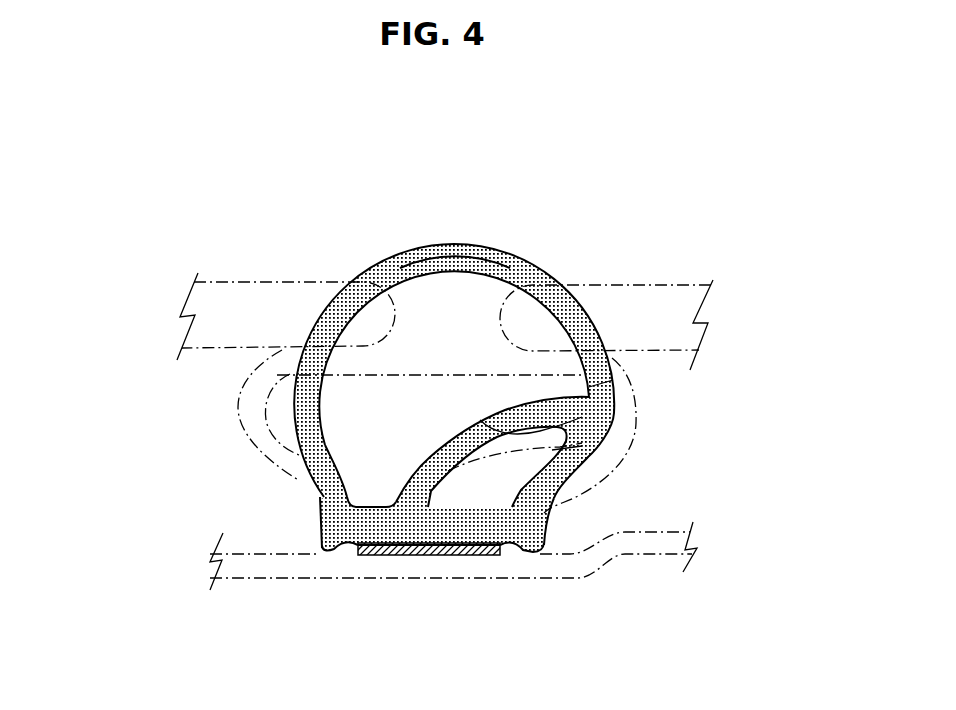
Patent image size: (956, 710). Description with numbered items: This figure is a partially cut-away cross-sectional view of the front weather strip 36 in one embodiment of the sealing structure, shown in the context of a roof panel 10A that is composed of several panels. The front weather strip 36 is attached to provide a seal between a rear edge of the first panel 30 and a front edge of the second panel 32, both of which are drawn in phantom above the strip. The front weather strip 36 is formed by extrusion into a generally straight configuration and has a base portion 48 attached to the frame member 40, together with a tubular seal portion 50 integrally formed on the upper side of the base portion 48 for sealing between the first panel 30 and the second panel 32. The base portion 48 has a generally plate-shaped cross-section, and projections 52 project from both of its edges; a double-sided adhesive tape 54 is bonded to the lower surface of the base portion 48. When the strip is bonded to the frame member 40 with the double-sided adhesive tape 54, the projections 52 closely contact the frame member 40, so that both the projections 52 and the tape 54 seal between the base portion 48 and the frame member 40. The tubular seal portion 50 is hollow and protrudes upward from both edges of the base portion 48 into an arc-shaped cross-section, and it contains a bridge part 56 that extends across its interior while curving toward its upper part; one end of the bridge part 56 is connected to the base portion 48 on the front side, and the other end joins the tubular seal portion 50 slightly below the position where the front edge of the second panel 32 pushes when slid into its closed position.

The roof panel 10A is at (227, 272).
The first panel 30 is at (257, 280).
The second panel 32 is at (647, 287).
The front weather strip 36 is at (556, 260).
The frame member 40 is at (643, 553).
The base portion 48 is at (372, 527).
The tubular seal portion 50 is at (396, 268).
The projections 52 is at (328, 555).
The double-sided adhesive tape 54 is at (453, 557).
The bridge part 56 is at (480, 420).